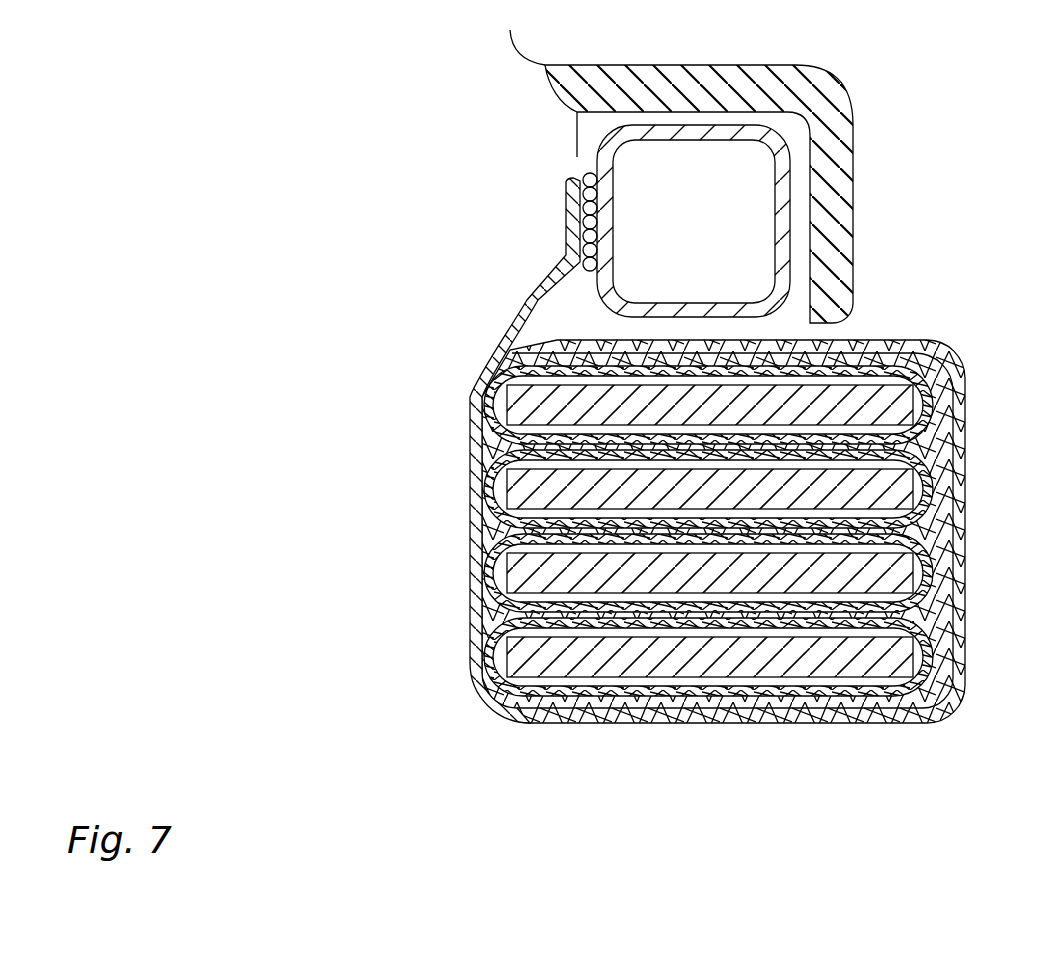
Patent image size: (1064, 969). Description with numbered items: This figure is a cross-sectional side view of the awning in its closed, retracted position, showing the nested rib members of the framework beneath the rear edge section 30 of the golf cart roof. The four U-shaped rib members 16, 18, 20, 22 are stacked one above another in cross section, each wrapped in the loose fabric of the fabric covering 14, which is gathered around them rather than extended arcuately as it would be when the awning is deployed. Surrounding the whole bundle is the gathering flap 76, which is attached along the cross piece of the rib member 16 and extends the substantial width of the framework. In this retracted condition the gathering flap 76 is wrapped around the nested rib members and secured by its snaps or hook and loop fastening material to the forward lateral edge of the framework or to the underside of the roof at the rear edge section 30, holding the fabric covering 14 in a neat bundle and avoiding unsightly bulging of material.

The fabric covering 14 is at (930, 673).
The U-shaped rib member 16 is at (897, 398).
The U-shaped rib member 18 is at (897, 480).
The U-shaped rib member 20 is at (897, 583).
The U-shaped rib member 22 is at (897, 670).
The rear edge section of the roof of the cart 30 is at (830, 108).
The gathering flap 76 is at (555, 275).